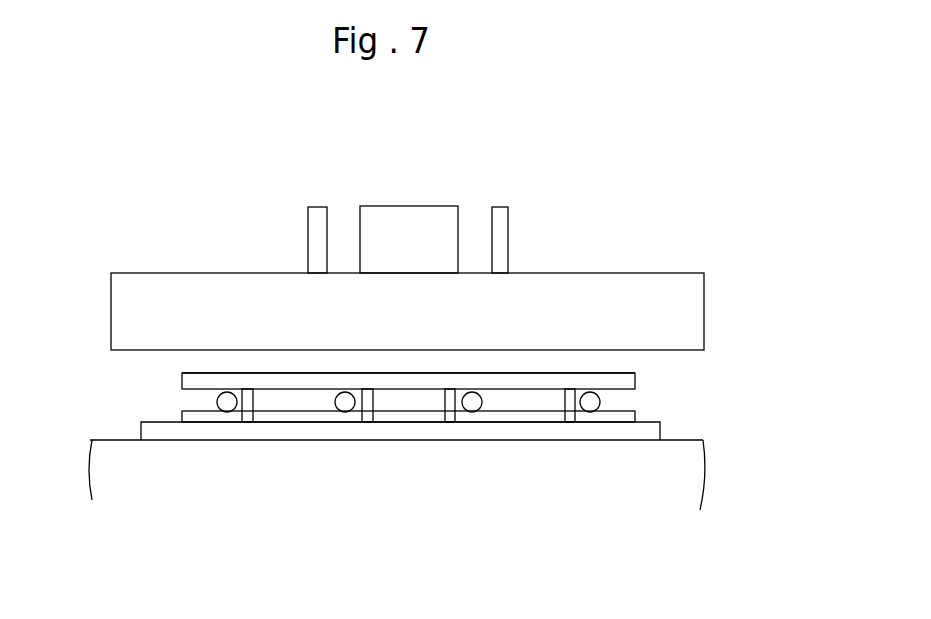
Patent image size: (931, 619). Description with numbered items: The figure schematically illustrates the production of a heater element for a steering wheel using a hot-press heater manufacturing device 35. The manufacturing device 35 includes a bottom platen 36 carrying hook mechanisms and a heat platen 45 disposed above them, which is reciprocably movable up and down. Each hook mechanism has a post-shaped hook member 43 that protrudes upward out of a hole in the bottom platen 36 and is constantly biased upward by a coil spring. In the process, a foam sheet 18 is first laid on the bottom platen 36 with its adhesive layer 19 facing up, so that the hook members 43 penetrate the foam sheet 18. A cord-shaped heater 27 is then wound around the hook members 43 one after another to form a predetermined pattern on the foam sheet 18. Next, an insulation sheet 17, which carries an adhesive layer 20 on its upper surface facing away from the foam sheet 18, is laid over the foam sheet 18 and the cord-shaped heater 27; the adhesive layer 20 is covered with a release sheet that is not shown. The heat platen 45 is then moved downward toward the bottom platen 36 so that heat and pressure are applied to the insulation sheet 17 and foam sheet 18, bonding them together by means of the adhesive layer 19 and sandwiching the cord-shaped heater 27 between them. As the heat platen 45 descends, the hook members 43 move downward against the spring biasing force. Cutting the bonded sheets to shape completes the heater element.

The heater manufacturing device 35 is at (573, 258).
The heat platen 45 is at (685, 303).
The adhesive layer 20 is at (612, 373).
The adhesive layer 19 is at (540, 410).
The insulation sheet 17 is at (636, 384).
The foam sheet 18 is at (636, 418).
The bottom platen 36 is at (160, 434).
The hook member 43 is at (247, 422).
The cord-shaped heater 27 is at (342, 397).